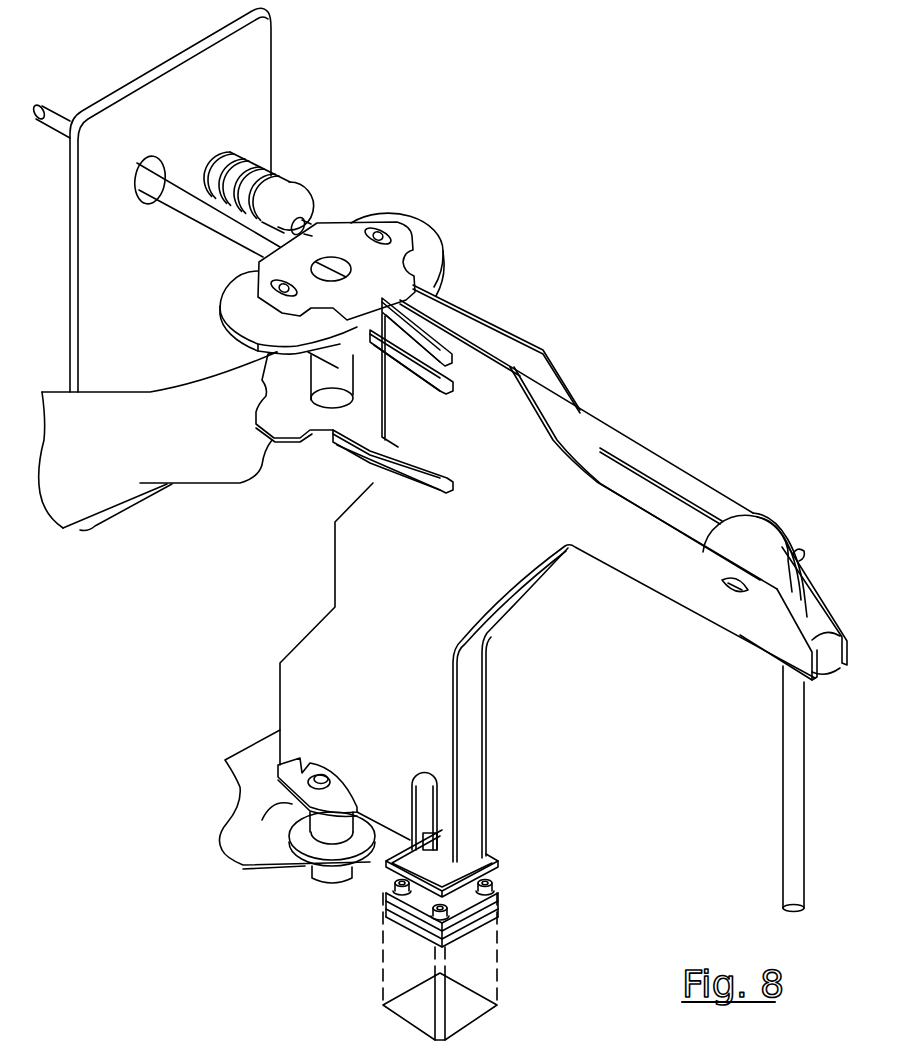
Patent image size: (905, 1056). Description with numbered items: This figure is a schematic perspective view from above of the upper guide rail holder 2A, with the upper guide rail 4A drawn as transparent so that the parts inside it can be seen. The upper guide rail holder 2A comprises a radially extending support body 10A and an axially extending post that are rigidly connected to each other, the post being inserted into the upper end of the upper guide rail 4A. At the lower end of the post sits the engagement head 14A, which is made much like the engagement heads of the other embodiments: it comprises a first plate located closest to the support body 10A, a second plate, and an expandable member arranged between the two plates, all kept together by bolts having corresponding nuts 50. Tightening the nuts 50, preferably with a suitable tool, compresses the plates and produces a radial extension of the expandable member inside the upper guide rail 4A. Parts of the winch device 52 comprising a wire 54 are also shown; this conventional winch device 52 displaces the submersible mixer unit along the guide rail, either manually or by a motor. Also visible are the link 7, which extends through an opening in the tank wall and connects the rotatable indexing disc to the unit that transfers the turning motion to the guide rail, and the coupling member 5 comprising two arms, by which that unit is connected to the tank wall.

The link 7 is at (294, 173).
The winch device 52 is at (604, 431).
The coupling member 5 is at (207, 463).
The upper guide rail holder 2A is at (488, 850).
The support body 10A is at (413, 853).
The nuts 50 is at (487, 888).
The engagement head 14A is at (500, 905).
The upper guide rail 4A is at (490, 990).
The wire 54 is at (795, 757).